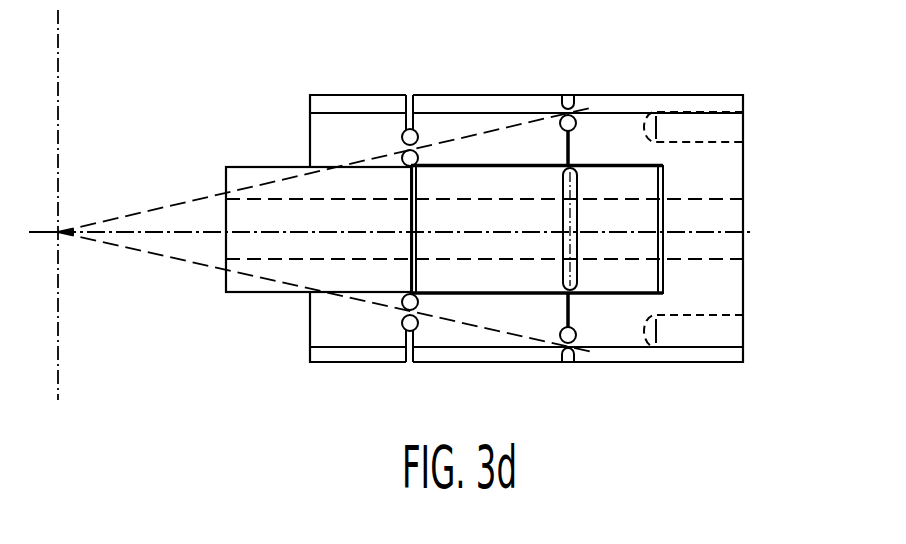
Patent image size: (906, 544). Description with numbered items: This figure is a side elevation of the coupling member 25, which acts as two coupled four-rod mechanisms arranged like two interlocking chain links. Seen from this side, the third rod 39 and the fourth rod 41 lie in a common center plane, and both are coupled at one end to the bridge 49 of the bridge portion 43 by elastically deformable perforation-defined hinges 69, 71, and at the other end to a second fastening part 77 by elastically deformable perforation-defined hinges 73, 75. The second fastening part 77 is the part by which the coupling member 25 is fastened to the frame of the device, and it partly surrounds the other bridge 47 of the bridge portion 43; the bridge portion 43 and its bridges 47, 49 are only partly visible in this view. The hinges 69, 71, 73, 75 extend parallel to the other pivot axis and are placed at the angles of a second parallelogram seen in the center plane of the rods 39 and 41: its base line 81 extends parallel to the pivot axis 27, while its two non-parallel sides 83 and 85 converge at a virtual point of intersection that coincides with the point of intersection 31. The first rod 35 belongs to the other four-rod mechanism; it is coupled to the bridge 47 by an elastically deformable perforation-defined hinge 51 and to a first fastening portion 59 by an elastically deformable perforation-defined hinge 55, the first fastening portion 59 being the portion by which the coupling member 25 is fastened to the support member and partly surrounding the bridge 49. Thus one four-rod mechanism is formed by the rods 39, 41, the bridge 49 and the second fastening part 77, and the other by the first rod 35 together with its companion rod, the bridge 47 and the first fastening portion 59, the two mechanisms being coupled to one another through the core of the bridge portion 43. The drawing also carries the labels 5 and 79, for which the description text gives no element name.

The focal point 5 is at (43, 229).
The coupling member 25 is at (734, 391).
The pivot axis 27 is at (57, 41).
The point of intersection 31 is at (56, 236).
The first rod 35 is at (517, 187).
The third rod 39 is at (443, 105).
The fourth rod 41 is at (450, 355).
The bridge portion 43 is at (525, 199).
The bridge 47 is at (620, 186).
The bridge 49 is at (338, 105).
The elastically deformable perforation-defined hinge 51 is at (581, 285).
The elastically deformable perforation-defined hinge 55 is at (409, 268).
The first fastening portion 59 is at (262, 292).
The elastically deformable perforation-defined hinge 69 is at (402, 132).
The elastically deformable perforation-defined hinge 71 is at (403, 329).
The elastically deformable perforation-defined hinge 73 is at (568, 108).
The elastically deformable perforation-defined hinge 75 is at (569, 344).
The second fastening part 77 is at (722, 177).
The guide lines 79 is at (487, 330).
The base line 81 is at (578, 240).
The non-parallel side 83 is at (325, 256).
The non-parallel side 85 is at (483, 126).